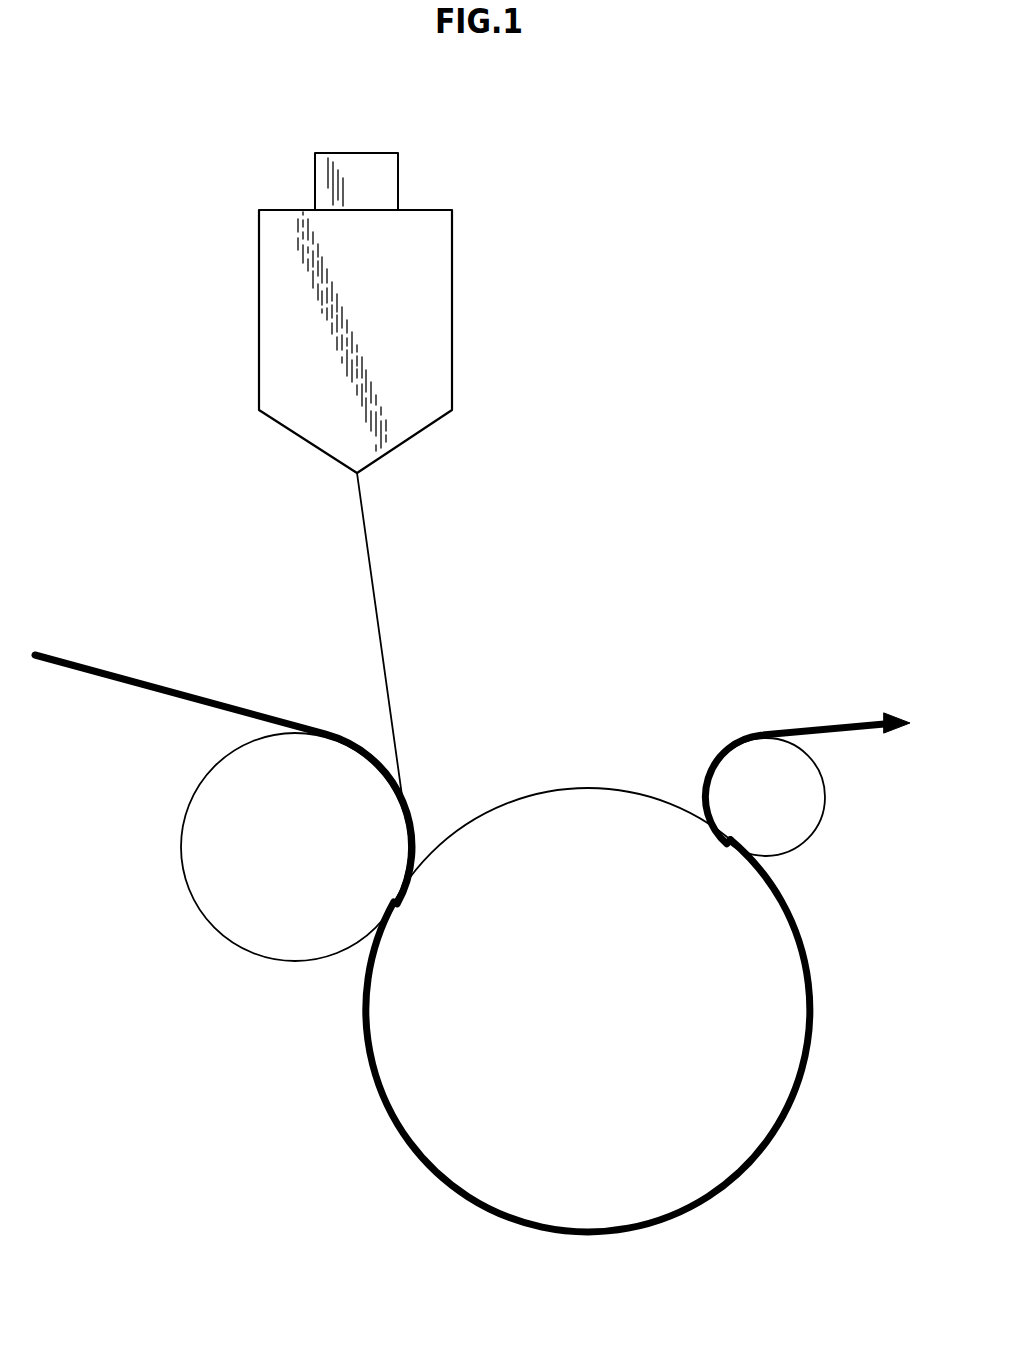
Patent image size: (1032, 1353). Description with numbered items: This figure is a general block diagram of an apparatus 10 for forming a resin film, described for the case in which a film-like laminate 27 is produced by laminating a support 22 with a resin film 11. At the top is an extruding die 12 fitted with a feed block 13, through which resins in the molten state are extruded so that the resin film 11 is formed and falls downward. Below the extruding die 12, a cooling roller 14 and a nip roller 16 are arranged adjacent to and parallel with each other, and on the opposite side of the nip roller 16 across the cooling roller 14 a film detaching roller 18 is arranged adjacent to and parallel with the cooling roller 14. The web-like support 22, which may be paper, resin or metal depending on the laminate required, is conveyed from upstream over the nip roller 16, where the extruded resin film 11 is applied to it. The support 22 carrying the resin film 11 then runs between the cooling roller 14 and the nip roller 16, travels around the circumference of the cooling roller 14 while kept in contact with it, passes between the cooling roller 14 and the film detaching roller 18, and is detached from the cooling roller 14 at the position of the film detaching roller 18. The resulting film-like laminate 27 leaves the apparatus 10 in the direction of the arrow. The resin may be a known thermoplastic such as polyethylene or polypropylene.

The apparatus for forming a resin film 10 is at (694, 390).
The resin film 11 is at (382, 621).
The extruding die 12 is at (433, 323).
The feed block 13 is at (378, 181).
The cooling roller 14 is at (602, 805).
The nip roller 16 is at (275, 947).
The film detaching roller 18 is at (795, 818).
The support 22 is at (118, 675).
The film-like laminate 27 is at (832, 725).